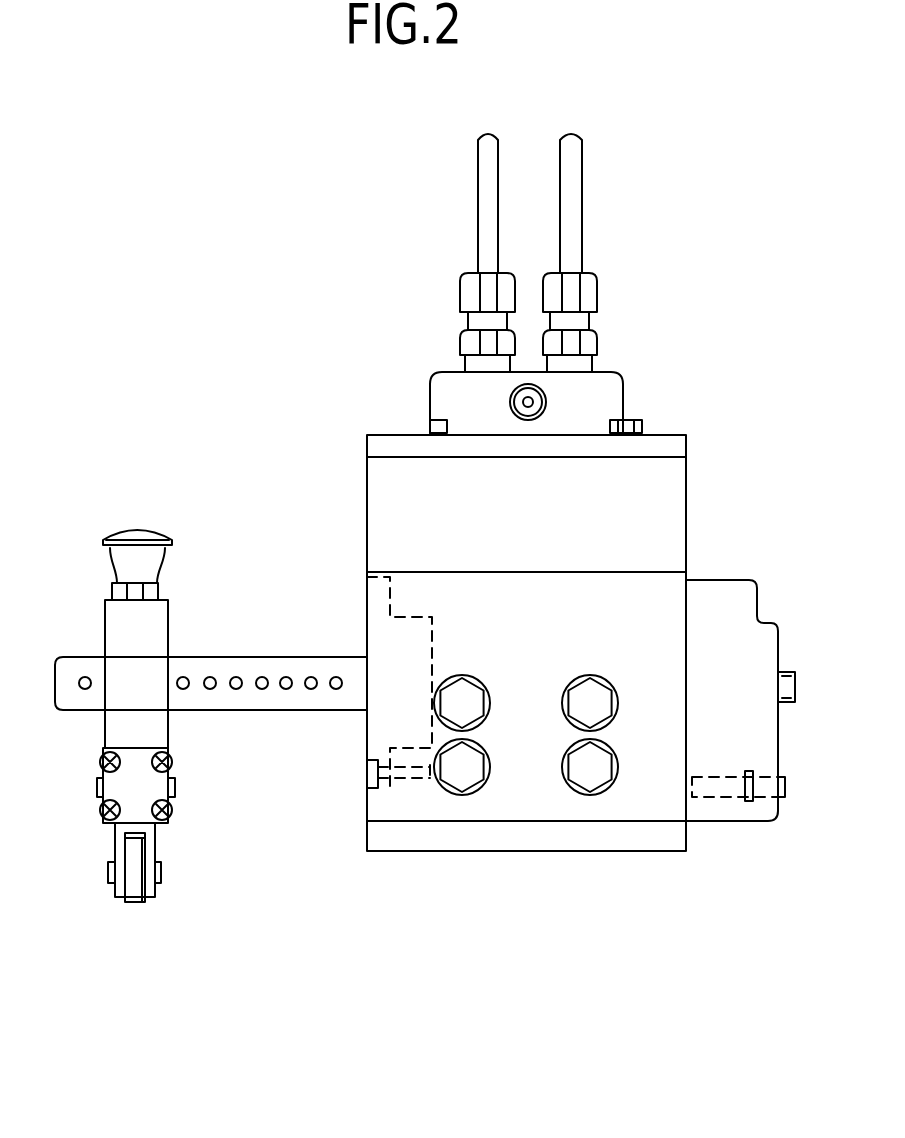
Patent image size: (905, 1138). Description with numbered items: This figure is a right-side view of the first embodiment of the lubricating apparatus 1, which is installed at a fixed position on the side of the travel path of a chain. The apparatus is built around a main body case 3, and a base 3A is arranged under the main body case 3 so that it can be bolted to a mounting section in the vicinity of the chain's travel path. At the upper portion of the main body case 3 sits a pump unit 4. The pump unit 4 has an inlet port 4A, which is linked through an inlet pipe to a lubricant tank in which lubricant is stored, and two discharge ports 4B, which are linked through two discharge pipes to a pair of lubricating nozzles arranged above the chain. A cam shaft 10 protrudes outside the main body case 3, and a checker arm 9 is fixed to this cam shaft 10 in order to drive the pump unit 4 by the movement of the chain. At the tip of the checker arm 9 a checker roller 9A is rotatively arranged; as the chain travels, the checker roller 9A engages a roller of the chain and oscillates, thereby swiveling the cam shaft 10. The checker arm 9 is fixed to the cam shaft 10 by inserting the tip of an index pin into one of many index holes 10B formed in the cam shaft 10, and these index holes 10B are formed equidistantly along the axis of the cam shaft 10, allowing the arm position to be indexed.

The lubricating apparatus 1 is at (708, 505).
The main body case 3 is at (378, 803).
The base 3A is at (453, 846).
The pump unit 4 is at (683, 476).
The inlet port 4A is at (548, 402).
The discharge ports 4B is at (460, 292).
The checker arm 9 is at (84, 728).
The checker roller 9A is at (135, 905).
The cam shaft 10 is at (278, 657).
The index holes 10B is at (238, 690).